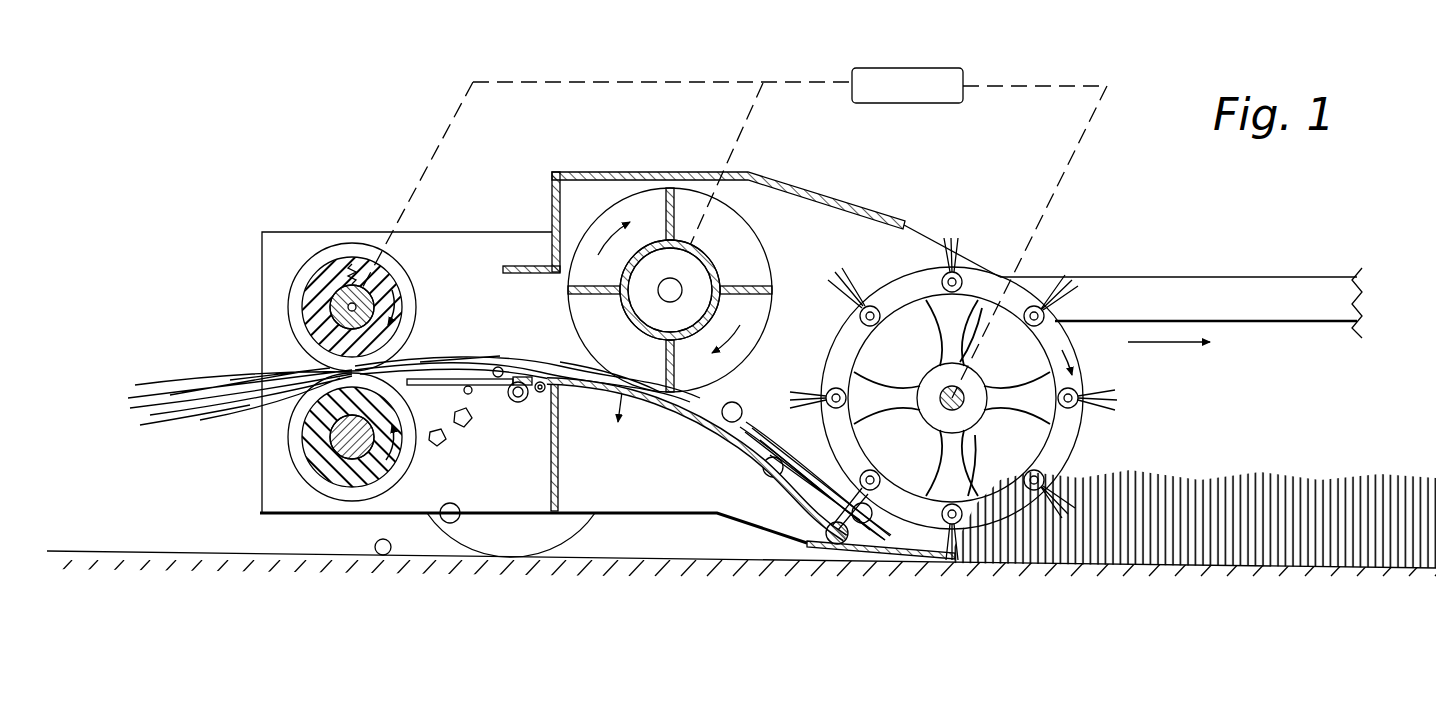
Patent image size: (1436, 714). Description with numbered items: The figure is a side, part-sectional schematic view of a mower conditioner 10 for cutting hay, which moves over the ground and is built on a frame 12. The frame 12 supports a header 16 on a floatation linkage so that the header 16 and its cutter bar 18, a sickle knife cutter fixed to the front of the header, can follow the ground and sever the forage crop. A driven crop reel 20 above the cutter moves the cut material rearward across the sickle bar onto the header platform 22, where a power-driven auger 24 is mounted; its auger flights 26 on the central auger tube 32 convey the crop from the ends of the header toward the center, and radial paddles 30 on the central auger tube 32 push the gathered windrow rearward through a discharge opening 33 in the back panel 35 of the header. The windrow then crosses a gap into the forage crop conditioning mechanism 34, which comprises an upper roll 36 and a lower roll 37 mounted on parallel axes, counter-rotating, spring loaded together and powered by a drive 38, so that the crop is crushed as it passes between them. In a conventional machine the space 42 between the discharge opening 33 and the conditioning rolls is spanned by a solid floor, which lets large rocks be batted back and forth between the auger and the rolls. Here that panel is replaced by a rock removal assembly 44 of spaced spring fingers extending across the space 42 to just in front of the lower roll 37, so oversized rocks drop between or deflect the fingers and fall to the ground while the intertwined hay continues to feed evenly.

The mower conditioner 10 is at (1076, 225).
The frame 12 is at (670, 485).
The header 16 is at (742, 470).
The cutter bar 18 is at (955, 560).
The crop reel 20 is at (1080, 382).
The header platform 22 is at (748, 455).
The auger 24 is at (685, 251).
The auger flights 26 is at (645, 213).
The radial paddles 30 is at (596, 297).
The central auger tube 32 is at (720, 272).
The discharge opening 33 is at (536, 342).
The forage crop conditioning mechanism 34 is at (302, 258).
The back panel 35 is at (548, 228).
The upper roll 36 is at (308, 305).
The lower roll 37 is at (385, 477).
The drive 38 is at (860, 73).
The space 42 is at (490, 406).
The rock removal assembly 44 is at (480, 383).